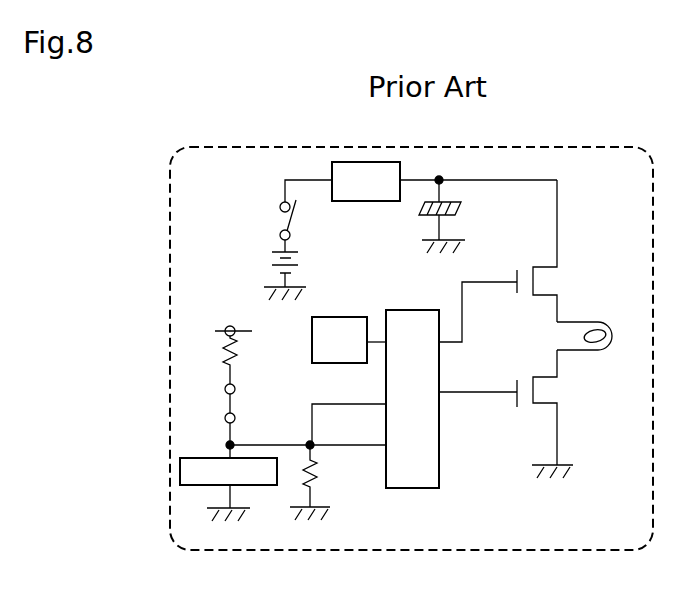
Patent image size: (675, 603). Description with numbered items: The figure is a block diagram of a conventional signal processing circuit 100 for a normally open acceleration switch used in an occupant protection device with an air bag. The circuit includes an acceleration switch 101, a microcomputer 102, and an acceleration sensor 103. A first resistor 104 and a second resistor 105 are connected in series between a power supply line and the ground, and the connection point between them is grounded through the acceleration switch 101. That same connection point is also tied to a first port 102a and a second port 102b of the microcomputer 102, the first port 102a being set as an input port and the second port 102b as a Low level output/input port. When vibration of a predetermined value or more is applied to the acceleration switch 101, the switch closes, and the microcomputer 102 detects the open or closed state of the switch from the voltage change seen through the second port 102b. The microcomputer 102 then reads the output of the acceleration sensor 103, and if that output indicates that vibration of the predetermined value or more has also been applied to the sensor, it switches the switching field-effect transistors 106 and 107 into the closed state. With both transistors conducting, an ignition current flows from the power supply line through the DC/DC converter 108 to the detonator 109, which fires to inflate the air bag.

The signal processing circuit 100 is at (350, 550).
The acceleration switch 101 is at (242, 485).
The microcomputer 102 is at (408, 488).
The first port 102a is at (332, 405).
The second port 102b is at (337, 447).
The acceleration sensor 103 is at (332, 363).
The first resistor 104 is at (238, 352).
The second resistor 105 is at (322, 480).
The switching field-effect transistor 106 is at (518, 293).
The switching field-effect transistor 107 is at (522, 405).
The DC/DC converter 108 is at (355, 201).
The detonator 109 is at (593, 358).